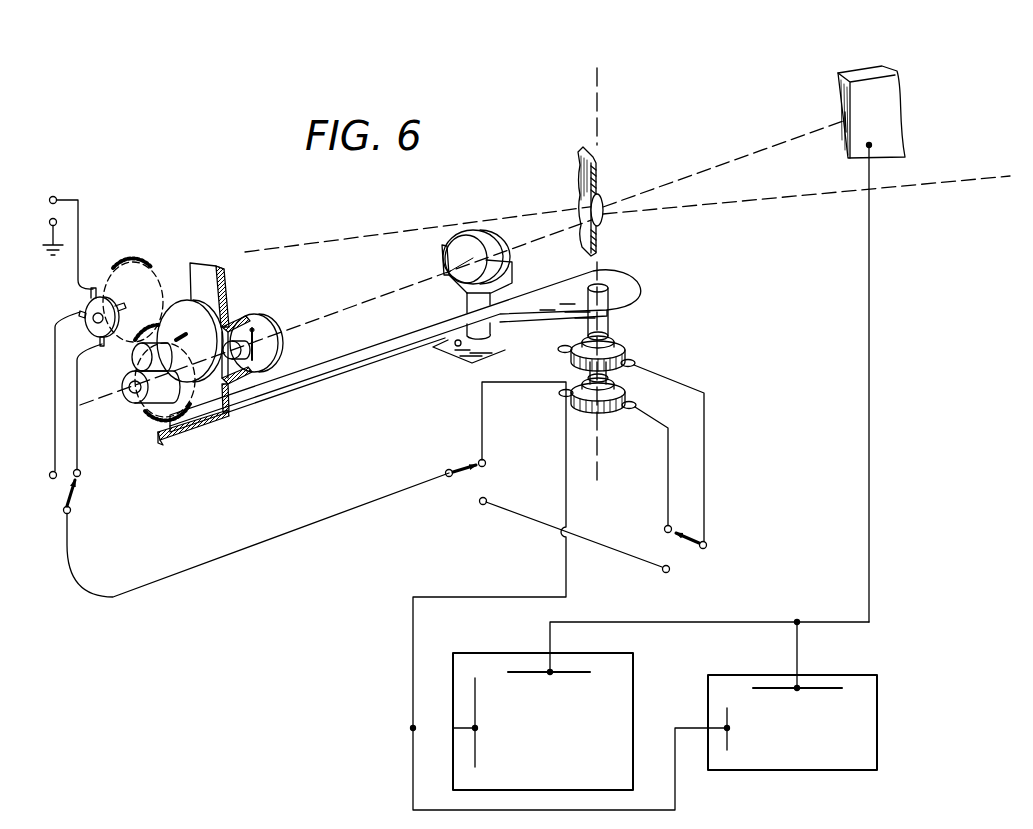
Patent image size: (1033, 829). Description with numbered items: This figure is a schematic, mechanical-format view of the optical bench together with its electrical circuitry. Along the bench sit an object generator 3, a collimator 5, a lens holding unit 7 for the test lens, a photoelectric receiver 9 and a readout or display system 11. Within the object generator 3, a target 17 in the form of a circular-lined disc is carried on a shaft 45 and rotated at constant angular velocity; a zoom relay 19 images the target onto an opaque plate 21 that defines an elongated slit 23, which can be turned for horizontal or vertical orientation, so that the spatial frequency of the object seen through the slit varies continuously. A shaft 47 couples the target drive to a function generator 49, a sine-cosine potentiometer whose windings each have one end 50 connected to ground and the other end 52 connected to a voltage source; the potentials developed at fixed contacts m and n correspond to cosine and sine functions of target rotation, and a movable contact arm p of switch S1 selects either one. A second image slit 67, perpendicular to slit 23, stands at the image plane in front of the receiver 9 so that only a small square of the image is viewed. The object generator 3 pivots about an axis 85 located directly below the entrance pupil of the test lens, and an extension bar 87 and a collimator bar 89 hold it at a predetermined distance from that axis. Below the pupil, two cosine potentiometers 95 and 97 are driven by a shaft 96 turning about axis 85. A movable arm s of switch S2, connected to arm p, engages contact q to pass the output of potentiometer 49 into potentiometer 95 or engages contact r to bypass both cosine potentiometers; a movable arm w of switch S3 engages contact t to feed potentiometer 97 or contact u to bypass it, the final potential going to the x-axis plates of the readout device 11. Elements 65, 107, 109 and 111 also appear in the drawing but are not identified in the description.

The object generator 3 is at (248, 306).
The collimator 5 is at (438, 252).
The lens holding unit 7 is at (606, 183).
The photoelectric receiver 9 is at (866, 62).
The readout or display system 11 is at (712, 790).
The target 17 is at (182, 308).
The zoom relay 19 is at (240, 386).
The plate 21 is at (263, 333).
The slit 23 is at (246, 354).
The shaft 45 is at (161, 407).
The shaft 47 is at (128, 304).
The function generator 49 is at (86, 302).
The winding end 50 is at (57, 237).
The winding end 52 is at (84, 181).
The hub 65 is at (141, 359).
The second image slit 67 is at (842, 122).
The axis 85 is at (594, 84).
The extension bar 87 is at (330, 371).
The collimator bar 89 is at (453, 349).
The cosine potentiometer 95 is at (628, 356).
The shaft 96 is at (606, 322).
The cosine potentiometer 97 is at (630, 401).
The wire 107 is at (484, 418).
The wire 109 is at (668, 468).
The switch arm 111 is at (575, 537).
The single-pole double-throw switch S1 is at (87, 413).
The single-pole double-throw switch S2 is at (462, 473).
The single-pole double-throw switch S3 is at (680, 548).
The fixed contact m is at (49, 490).
The fixed contact n is at (80, 470).
The movable contact arm p is at (72, 498).
The contact q is at (486, 463).
The contact r is at (487, 499).
The movable contact arm s is at (449, 478).
The contact t is at (665, 525).
The contact u is at (635, 557).
The movable contact arm w is at (702, 540).